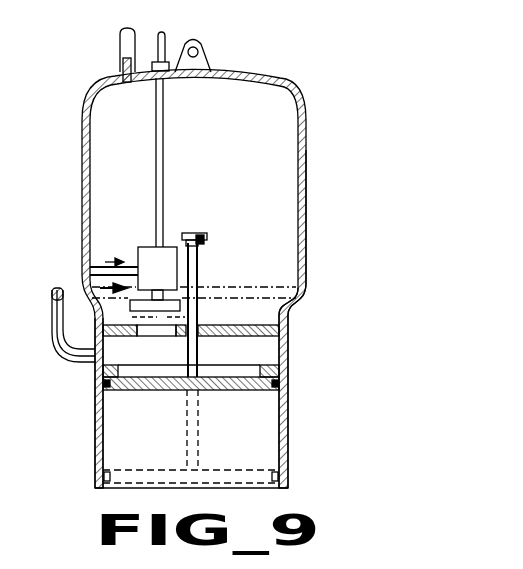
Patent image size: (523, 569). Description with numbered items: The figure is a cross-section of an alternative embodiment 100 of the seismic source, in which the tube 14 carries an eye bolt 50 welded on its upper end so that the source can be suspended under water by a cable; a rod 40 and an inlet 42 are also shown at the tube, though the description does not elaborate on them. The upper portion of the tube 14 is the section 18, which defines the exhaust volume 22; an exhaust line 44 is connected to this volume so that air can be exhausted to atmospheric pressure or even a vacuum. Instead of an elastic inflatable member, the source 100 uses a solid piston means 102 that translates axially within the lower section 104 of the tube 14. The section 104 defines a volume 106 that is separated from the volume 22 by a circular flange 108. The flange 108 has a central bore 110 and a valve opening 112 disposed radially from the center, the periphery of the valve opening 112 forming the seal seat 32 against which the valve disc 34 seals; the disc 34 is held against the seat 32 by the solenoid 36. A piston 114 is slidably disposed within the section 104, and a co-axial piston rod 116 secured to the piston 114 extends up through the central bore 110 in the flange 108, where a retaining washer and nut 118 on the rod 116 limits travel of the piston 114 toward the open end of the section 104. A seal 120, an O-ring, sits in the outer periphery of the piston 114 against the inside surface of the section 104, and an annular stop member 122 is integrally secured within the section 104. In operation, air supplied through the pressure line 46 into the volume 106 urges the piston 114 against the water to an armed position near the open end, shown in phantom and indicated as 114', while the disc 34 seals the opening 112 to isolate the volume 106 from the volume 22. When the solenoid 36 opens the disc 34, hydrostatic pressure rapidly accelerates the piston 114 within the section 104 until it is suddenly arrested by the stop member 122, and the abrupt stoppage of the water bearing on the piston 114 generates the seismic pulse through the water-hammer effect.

The tube 14 is at (298, 303).
The section 18 is at (306, 172).
The exhaust volume 22 is at (221, 172).
The seal seat 32 is at (178, 322).
The valve disc 34 is at (178, 307).
The solenoid 36 is at (148, 247).
The rod 40 is at (165, 40).
The inlet pipe 42 is at (92, 283).
The exhaust line 44 is at (121, 46).
The pressure line 46 is at (62, 358).
The eye bolt 50 is at (203, 48).
The alternative embodiment 100 is at (316, 250).
The solid piston means 102 is at (288, 413).
The lower section 104 is at (285, 400).
The volume 106 is at (257, 364).
The circular flange 108 is at (232, 324).
The central bore 110 is at (186, 333).
The valve opening 112 is at (144, 328).
The piston 114 is at (191, 436).
The piston in armed position 114' is at (229, 430).
The piston rod 116 is at (195, 262).
The retaining washer and nut 118 is at (198, 233).
The seal 120 is at (285, 382).
The annular stop member 122 is at (287, 358).